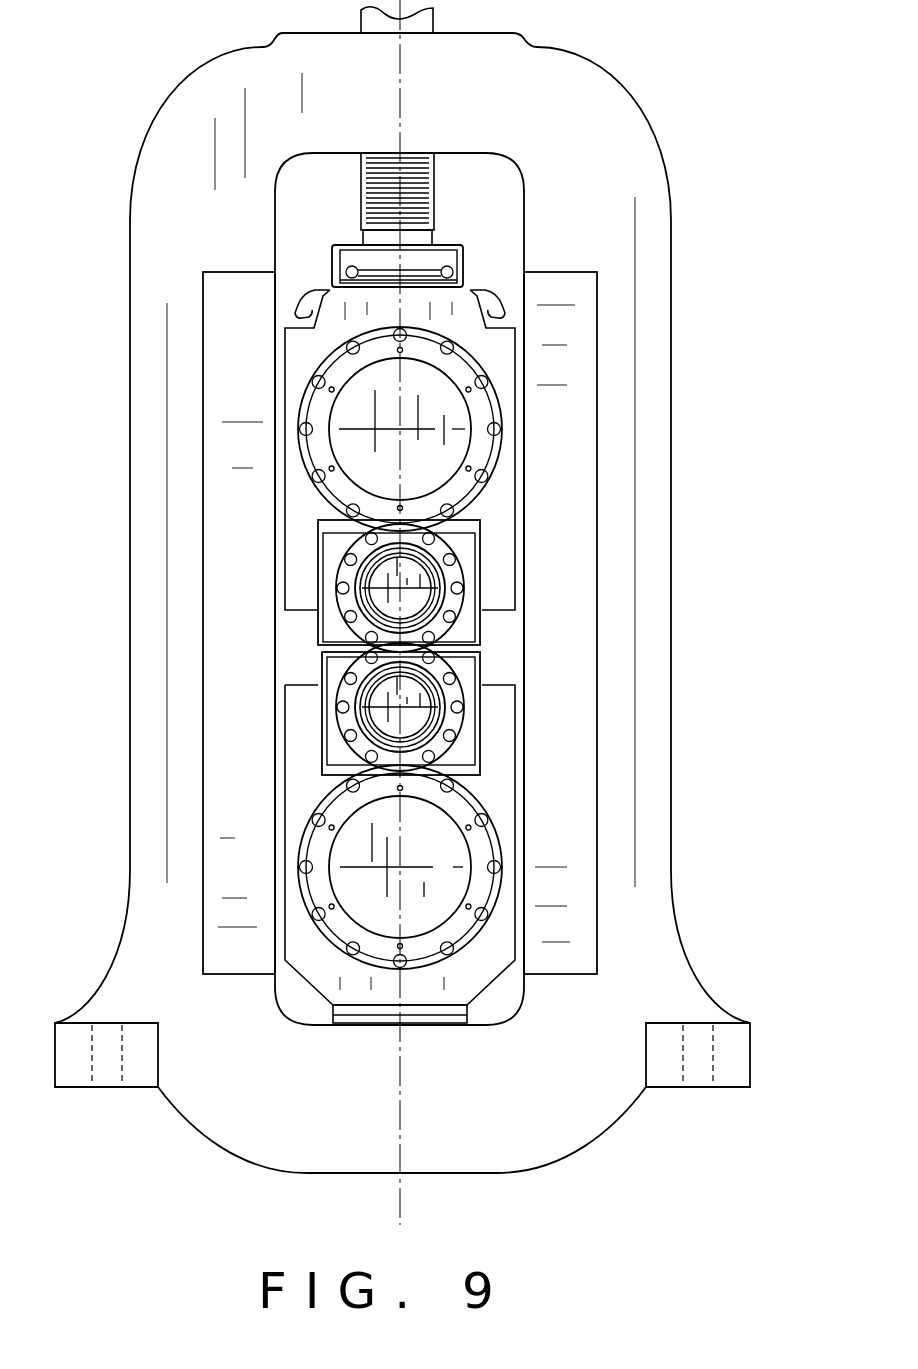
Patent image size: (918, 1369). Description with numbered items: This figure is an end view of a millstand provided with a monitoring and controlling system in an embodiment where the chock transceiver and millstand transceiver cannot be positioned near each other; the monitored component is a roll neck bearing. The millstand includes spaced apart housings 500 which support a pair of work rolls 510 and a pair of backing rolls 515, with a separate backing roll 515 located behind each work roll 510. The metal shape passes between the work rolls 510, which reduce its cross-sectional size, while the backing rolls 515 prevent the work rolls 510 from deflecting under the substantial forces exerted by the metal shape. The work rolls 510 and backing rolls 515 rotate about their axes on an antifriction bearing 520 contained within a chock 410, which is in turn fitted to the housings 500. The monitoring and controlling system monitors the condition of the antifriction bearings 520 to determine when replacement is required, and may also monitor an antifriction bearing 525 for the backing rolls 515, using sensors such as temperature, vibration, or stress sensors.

The housings 500 is at (612, 92).
The antifriction bearing 525 is at (320, 365).
The backing roll 515 is at (347, 420).
The antifriction bearing 520 is at (320, 523).
The chock 410 is at (335, 558).
The work roll 510 is at (343, 585).